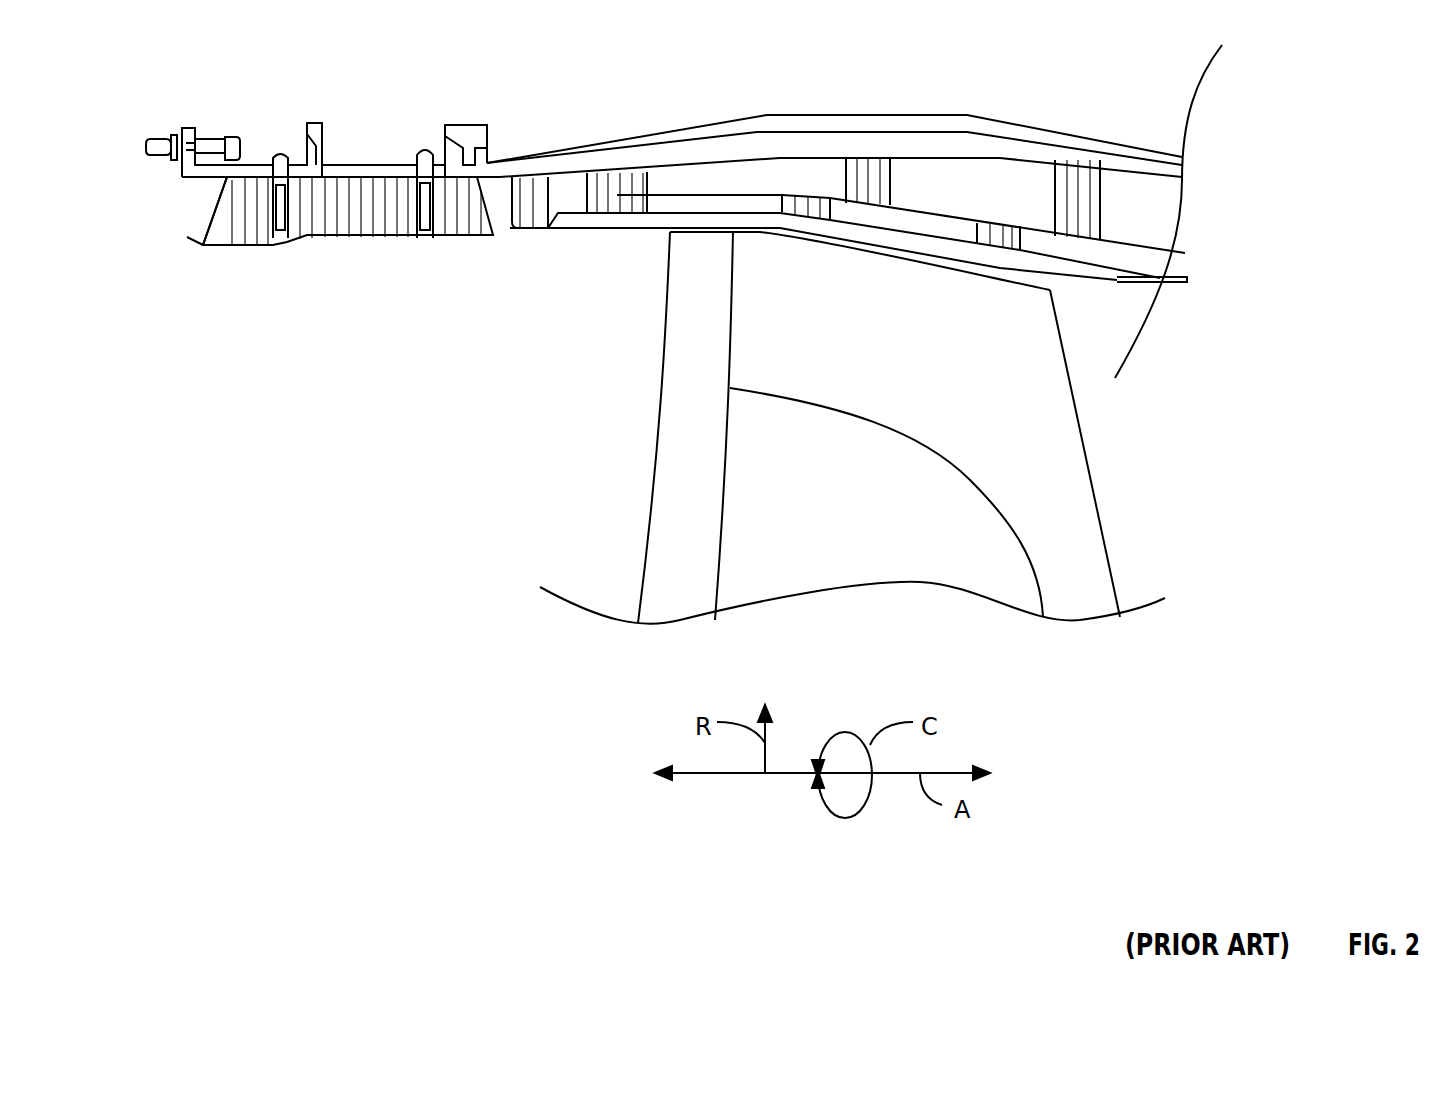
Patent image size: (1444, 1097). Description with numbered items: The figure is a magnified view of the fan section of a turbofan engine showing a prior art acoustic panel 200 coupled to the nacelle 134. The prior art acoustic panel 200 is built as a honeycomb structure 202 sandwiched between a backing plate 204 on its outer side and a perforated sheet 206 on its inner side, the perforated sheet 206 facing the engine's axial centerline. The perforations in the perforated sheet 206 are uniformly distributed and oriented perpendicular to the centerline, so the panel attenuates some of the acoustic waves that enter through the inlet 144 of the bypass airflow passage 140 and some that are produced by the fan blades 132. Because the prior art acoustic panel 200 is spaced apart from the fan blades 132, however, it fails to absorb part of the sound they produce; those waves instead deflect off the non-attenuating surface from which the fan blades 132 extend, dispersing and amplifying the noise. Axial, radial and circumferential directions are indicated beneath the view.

The fan blades 132 is at (667, 315).
The nacelle 134 is at (790, 116).
The bypass airflow passage 140 is at (424, 356).
The inlet 144 is at (135, 442).
The prior art acoustic panel 200 is at (371, 243).
The honeycomb structure 202 is at (223, 230).
The backing plate 204 is at (327, 172).
The perforated sheet 206 is at (257, 245).